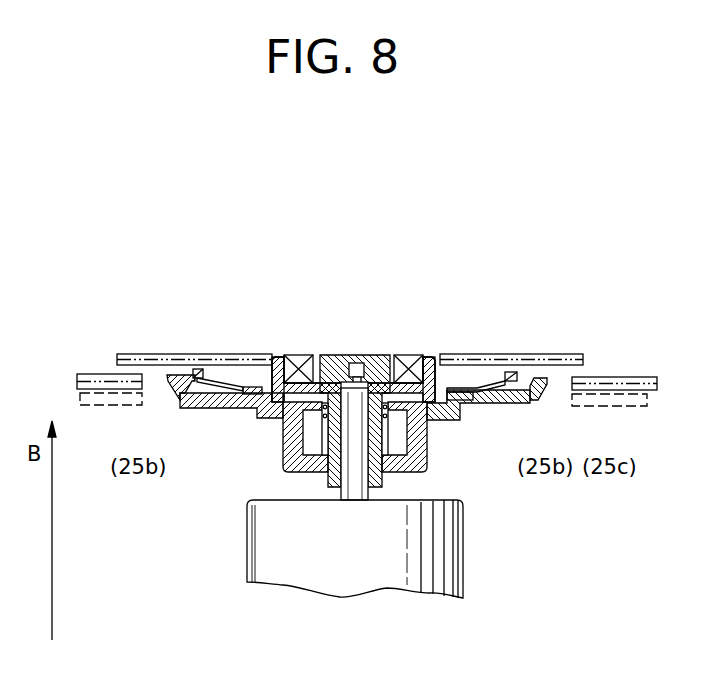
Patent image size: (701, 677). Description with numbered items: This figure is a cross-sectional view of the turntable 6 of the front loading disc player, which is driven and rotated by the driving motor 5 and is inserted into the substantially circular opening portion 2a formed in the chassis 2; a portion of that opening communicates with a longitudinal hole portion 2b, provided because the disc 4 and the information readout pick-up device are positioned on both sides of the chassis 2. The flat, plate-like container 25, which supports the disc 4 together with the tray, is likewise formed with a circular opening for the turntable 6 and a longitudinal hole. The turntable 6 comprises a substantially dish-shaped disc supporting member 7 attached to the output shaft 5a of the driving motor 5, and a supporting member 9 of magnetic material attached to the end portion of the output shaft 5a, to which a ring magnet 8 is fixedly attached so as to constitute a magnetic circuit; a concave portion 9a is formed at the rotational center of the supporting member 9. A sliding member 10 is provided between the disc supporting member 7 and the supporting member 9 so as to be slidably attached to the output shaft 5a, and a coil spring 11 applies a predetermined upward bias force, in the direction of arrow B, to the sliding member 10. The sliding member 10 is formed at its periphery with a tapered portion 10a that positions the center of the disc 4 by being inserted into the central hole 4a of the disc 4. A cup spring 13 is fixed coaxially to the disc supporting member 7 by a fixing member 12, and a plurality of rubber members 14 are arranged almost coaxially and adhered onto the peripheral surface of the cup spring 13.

The chassis 2 is at (118, 402).
The circular opening portion 2a is at (166, 393).
The longitudinal hole portion 2b is at (600, 410).
The disc 4 is at (135, 359).
The central hole 4a is at (440, 358).
The driving motor 5 is at (262, 547).
The output shaft 5a is at (352, 494).
The turntable 6 is at (437, 292).
The disc supporting member 7 is at (178, 408).
The ring magnet 8 is at (298, 362).
The supporting member 9 is at (382, 360).
The concave portion 9a is at (356, 363).
The sliding member 10 is at (443, 380).
The tapered portion 10a is at (279, 358).
The coil spring 11 is at (385, 415).
The fixing member 12 is at (300, 406).
The cup spring 13 is at (226, 380).
The rubber members 14 is at (197, 369).
The container 25 is at (102, 380).